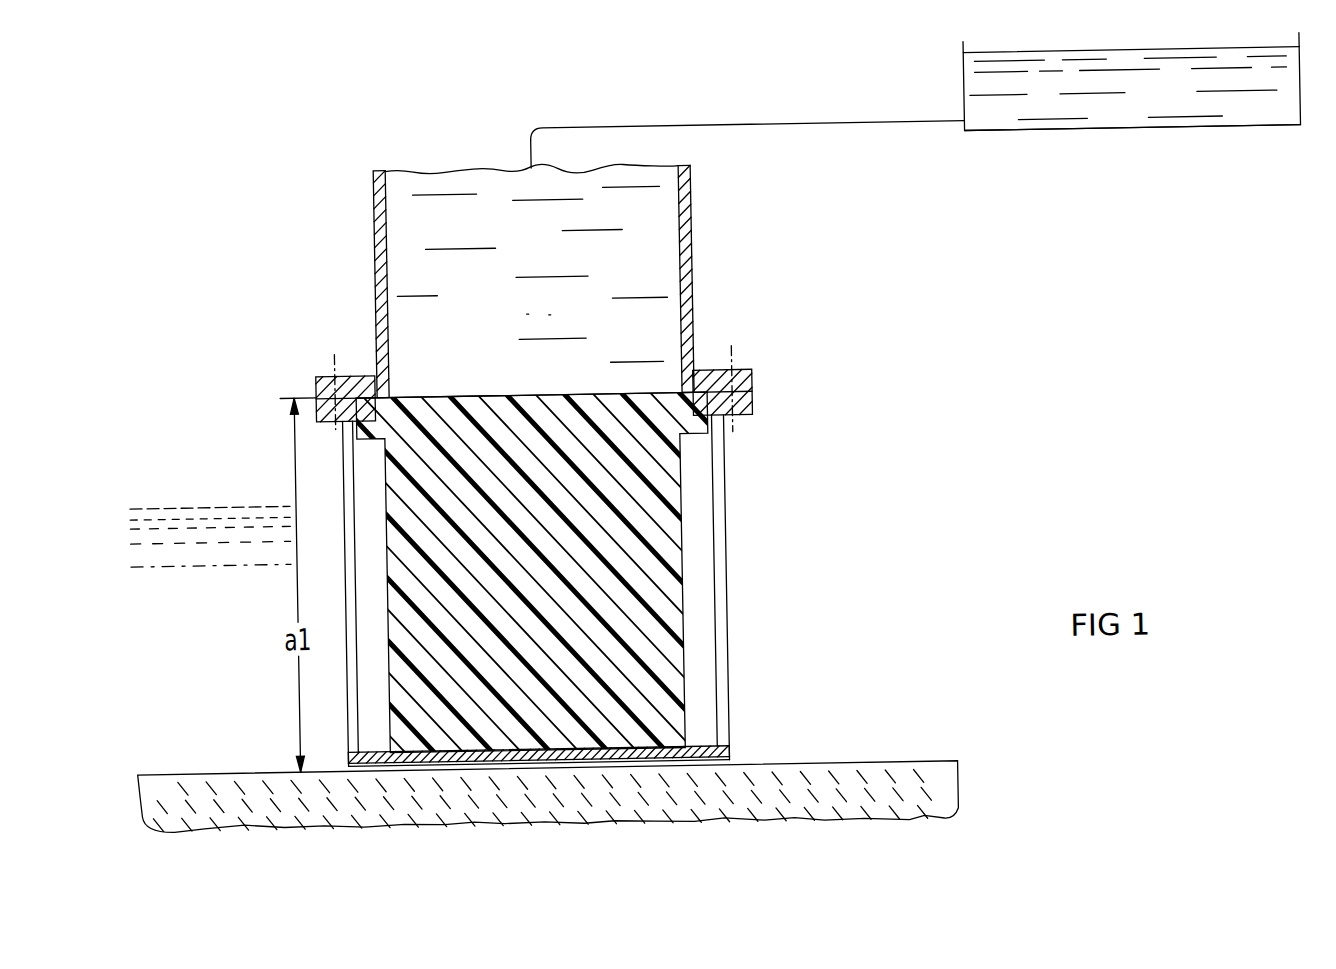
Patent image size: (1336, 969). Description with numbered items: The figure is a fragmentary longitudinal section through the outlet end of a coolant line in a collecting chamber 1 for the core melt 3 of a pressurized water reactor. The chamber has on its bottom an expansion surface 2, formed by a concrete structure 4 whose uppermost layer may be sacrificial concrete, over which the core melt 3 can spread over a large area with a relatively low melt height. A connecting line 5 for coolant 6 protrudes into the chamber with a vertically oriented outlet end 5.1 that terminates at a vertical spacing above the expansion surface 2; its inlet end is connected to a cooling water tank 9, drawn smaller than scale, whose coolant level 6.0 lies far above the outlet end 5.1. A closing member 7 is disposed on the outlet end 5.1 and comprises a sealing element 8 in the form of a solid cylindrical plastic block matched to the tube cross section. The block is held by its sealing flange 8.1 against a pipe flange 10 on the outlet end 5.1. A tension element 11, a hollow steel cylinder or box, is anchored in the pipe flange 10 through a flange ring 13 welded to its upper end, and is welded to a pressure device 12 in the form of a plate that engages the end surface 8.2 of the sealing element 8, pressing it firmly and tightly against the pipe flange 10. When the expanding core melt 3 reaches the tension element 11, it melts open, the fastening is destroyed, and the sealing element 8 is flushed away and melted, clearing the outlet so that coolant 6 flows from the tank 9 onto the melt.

The collecting chamber 1 is at (180, 688).
The expansion surface 2 is at (841, 770).
The core melt 3 is at (161, 518).
The concrete structure 4 is at (926, 797).
The connecting line 5 is at (645, 223).
The outlet end 5.1 is at (700, 243).
The coolant 6 is at (1181, 109).
The coolant level 6.0 is at (1109, 58).
The closing member 7 is at (805, 375).
The sealing element 8 is at (652, 562).
The sealing flange 8.1 is at (372, 417).
The end surface 8.2 is at (575, 746).
The cooling water tank 9 is at (1069, 139).
The pipe flange 10 is at (328, 371).
The tension element 11 is at (723, 491).
The pressure device 12 is at (702, 748).
The flange ring 13 is at (755, 409).